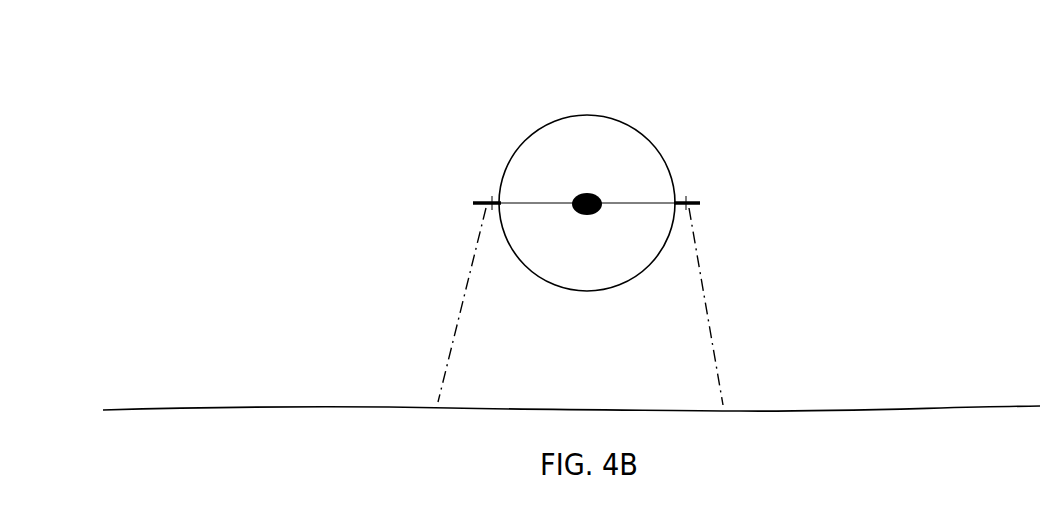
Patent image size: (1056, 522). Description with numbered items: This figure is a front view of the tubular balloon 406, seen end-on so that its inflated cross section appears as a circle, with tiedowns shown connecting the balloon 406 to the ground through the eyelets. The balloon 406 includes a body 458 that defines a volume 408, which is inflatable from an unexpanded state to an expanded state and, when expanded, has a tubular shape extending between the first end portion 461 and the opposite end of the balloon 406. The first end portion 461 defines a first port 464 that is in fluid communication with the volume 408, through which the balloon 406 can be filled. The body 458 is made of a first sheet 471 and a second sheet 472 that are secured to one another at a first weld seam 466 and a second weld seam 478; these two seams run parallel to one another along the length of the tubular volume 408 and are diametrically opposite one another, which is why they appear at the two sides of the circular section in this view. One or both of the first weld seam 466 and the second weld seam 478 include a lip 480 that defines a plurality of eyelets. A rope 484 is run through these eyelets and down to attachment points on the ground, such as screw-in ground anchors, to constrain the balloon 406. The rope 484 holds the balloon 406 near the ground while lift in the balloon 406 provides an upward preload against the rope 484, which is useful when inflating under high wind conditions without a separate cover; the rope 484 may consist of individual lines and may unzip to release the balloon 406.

The balloon 406 is at (530, 101).
The volume 408 is at (603, 172).
The body 458 is at (643, 130).
The first end portion 461 is at (556, 204).
The first port 464 is at (594, 210).
The first weld seam 466 is at (468, 194).
The first sheet 471 is at (598, 116).
The second sheet 472 is at (585, 291).
The second weld seam 478 is at (703, 200).
The lip 480 is at (492, 198).
The rope 484 is at (460, 312).